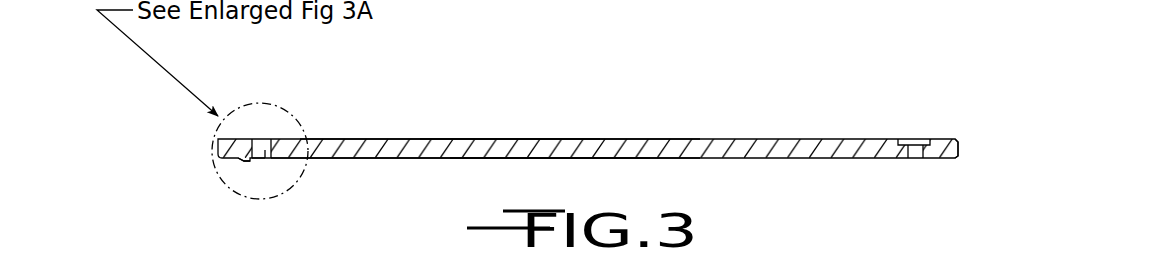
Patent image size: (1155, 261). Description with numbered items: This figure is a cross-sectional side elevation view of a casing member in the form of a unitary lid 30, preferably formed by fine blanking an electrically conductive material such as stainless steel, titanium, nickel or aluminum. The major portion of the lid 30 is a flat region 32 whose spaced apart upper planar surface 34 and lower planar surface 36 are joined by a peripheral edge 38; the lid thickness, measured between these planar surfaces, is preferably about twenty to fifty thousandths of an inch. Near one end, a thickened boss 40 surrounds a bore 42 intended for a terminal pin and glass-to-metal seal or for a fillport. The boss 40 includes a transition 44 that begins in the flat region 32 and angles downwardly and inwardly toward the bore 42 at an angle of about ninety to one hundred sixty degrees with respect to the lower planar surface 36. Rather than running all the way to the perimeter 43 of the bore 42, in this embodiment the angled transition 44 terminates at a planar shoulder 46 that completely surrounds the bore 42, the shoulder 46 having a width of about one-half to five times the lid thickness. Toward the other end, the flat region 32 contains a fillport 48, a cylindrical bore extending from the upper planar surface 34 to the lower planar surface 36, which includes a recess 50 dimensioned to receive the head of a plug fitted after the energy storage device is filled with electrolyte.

The lid 30 is at (986, 154).
The flat region 32 is at (477, 171).
The upper planar surface 34 is at (507, 139).
The lower planar surface 36 is at (548, 159).
The peripheral edge 38 is at (958, 140).
The thickened boss 40 is at (256, 172).
The bore 42 is at (262, 143).
The perimeter 43 is at (267, 165).
The transition 44 is at (283, 162).
The planar shoulder 46 is at (247, 161).
The fillport 48 is at (913, 158).
The recess 50 is at (903, 142).